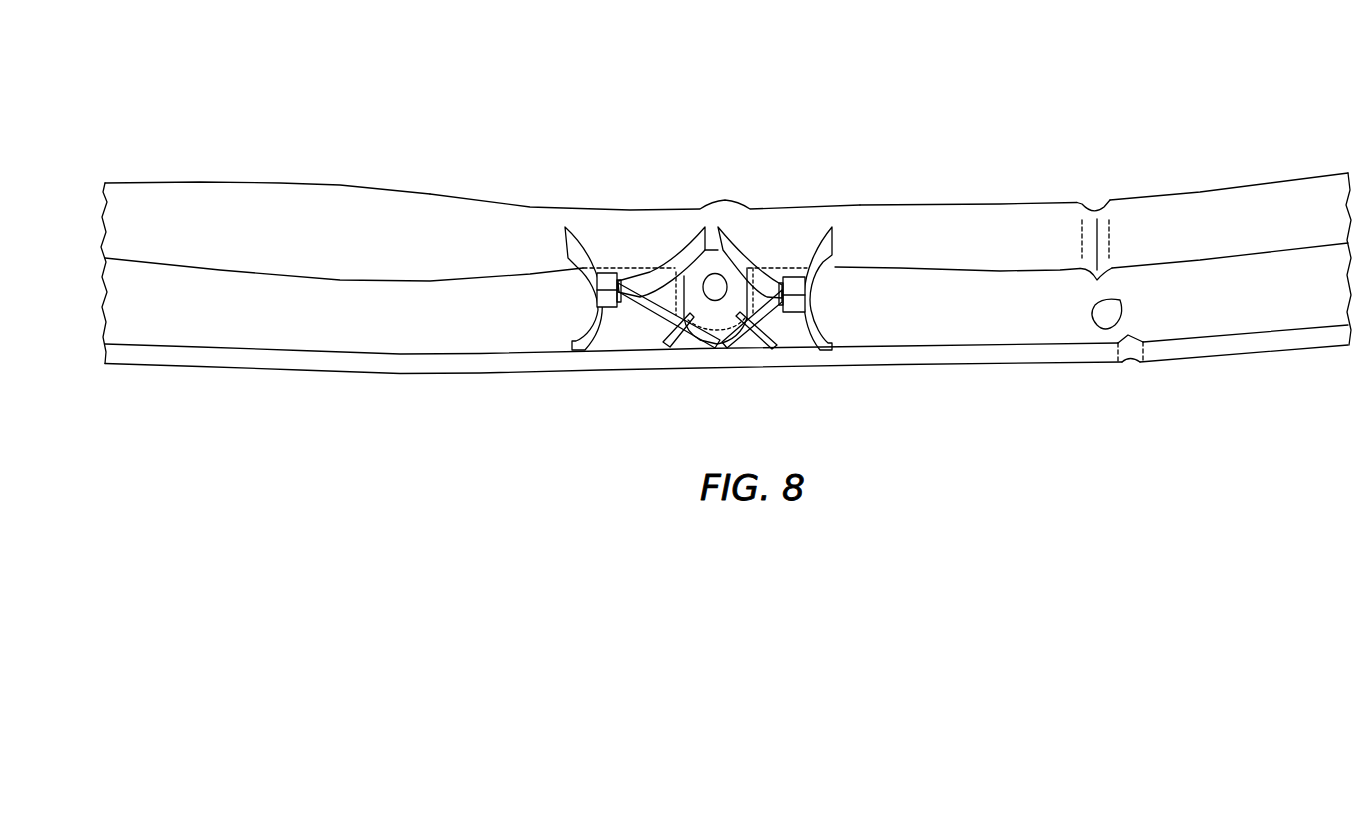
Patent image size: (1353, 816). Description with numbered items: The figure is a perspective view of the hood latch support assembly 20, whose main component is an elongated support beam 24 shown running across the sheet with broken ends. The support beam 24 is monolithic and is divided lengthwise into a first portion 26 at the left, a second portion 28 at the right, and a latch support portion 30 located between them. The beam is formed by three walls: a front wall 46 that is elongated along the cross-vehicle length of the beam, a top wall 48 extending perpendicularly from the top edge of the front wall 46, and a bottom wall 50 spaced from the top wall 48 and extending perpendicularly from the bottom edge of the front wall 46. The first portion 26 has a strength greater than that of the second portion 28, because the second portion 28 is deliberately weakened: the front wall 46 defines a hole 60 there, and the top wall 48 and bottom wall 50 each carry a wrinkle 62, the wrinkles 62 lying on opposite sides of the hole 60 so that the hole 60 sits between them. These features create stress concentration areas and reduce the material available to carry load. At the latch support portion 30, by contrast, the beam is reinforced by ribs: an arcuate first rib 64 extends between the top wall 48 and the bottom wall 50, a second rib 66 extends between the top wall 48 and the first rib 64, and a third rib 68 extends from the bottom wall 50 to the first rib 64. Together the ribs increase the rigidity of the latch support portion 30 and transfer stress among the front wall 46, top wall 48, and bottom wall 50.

The hood latch support assembly 20 is at (240, 84).
The support beam 24 is at (943, 218).
The first portion 26 is at (214, 197).
The second portion 28 is at (1138, 208).
The latch support portion 30 is at (627, 222).
The front wall 46 is at (158, 317).
The top wall 48 is at (463, 215).
The bottom wall 50 is at (440, 357).
The hole 60 is at (1122, 313).
The wrinkles 62 is at (1100, 232).
The first rib 64 is at (586, 272).
The second rib 66 is at (685, 248).
The third rib 68 is at (652, 313).